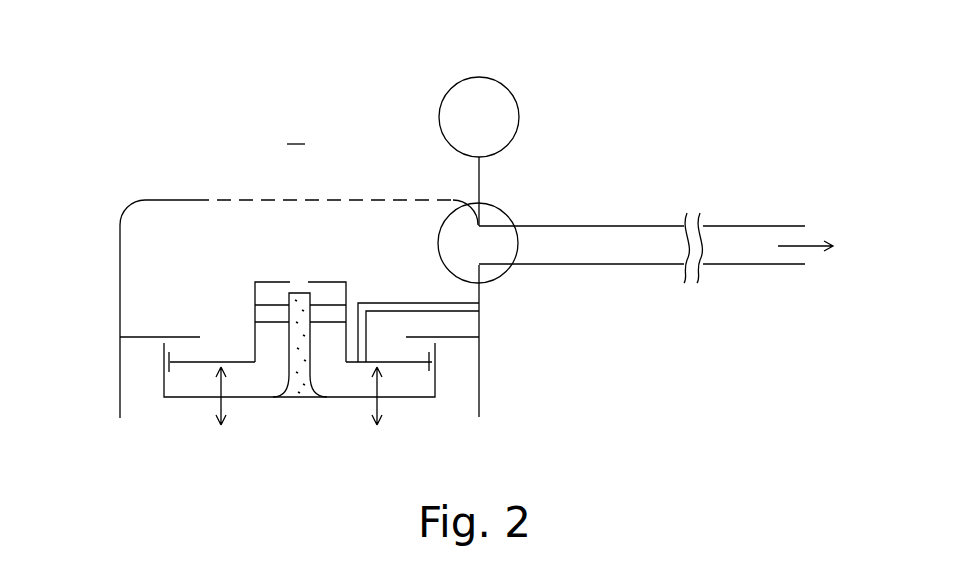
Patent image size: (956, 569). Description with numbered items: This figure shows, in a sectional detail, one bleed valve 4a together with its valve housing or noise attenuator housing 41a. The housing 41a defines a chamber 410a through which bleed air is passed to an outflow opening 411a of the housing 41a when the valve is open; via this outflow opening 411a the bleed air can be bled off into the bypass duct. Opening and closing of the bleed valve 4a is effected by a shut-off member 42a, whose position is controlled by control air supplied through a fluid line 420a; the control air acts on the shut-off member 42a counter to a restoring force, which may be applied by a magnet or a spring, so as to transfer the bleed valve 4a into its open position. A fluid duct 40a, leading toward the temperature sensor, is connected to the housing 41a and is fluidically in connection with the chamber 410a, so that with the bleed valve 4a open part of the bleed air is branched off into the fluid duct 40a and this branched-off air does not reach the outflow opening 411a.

The bleed valve 4a is at (390, 100).
The valve housing or noise attenuator housing 41a is at (130, 205).
The outflow opening 411a is at (233, 198).
The chamber 410a is at (144, 287).
The fluid duct 40a is at (583, 223).
The fluid line for control air 420a is at (497, 318).
The shut-off member 42a is at (403, 382).